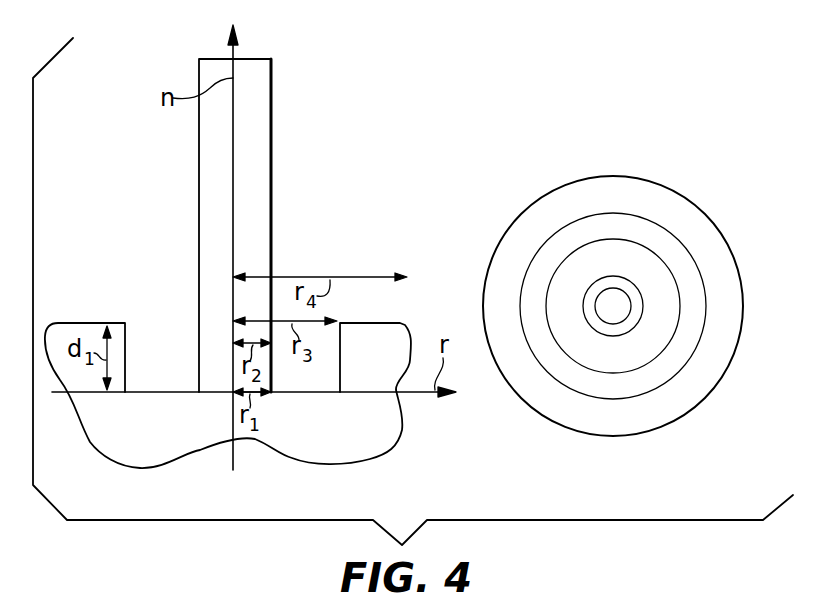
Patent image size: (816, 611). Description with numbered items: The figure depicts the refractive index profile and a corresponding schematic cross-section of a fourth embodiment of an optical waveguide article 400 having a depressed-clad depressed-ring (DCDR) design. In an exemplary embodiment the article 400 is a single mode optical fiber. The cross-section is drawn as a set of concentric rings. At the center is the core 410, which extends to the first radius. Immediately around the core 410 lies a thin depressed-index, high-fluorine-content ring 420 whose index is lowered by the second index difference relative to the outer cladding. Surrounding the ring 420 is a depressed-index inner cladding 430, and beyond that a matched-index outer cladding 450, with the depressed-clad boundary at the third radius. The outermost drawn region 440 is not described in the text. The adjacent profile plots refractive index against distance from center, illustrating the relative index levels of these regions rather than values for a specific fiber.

The optical waveguide article 400 is at (600, 339).
The core 410 is at (613, 310).
The high-fluorine-content ring 420 is at (623, 325).
The inner cladding 430 is at (638, 353).
The outer cladding 450 is at (653, 372).
The outer cladding 440 is at (698, 390).